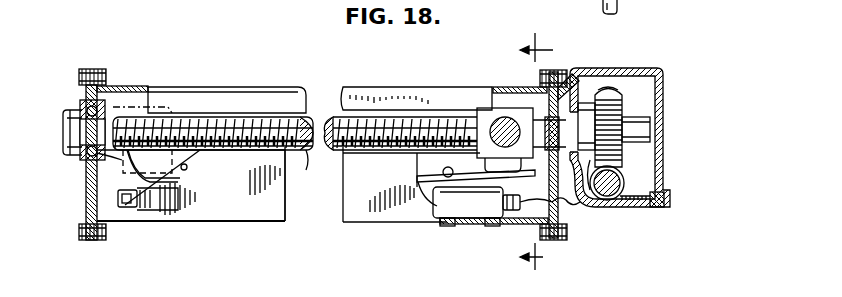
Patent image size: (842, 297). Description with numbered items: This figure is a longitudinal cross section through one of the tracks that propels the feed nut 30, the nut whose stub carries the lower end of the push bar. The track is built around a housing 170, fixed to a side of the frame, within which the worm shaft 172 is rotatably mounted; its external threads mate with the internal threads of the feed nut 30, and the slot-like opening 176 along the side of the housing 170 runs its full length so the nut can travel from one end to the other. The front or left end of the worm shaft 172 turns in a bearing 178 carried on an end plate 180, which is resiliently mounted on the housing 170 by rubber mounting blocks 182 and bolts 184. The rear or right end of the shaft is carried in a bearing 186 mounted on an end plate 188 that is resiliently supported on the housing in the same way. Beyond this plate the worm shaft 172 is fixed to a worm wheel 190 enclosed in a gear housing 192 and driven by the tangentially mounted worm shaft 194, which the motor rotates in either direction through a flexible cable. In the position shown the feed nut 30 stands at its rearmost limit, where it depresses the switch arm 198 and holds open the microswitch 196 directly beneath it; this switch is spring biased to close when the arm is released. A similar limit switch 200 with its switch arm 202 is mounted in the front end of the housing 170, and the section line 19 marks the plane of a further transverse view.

The section line 19- 19 is at (541, 154).
The feed nut 30 is at (167, 110).
The housing 170 is at (261, 221).
The worm shaft 172 is at (307, 152).
The slot-like opening 176 is at (264, 113).
The bearing 178 is at (80, 167).
The end plate 180 is at (86, 203).
The rubber mounting blocks 182 is at (97, 74).
The bolts 184 is at (80, 77).
The bearing 186 is at (564, 84).
The end plate 188 is at (580, 200).
The worm wheel 190 is at (630, 70).
The housing 192 is at (663, 83).
The worm shaft 194 is at (640, 162).
The microswitch 196 is at (473, 207).
The switch arm 198 is at (423, 190).
The limit switch 200 is at (143, 207).
The switch arm 202 is at (188, 168).